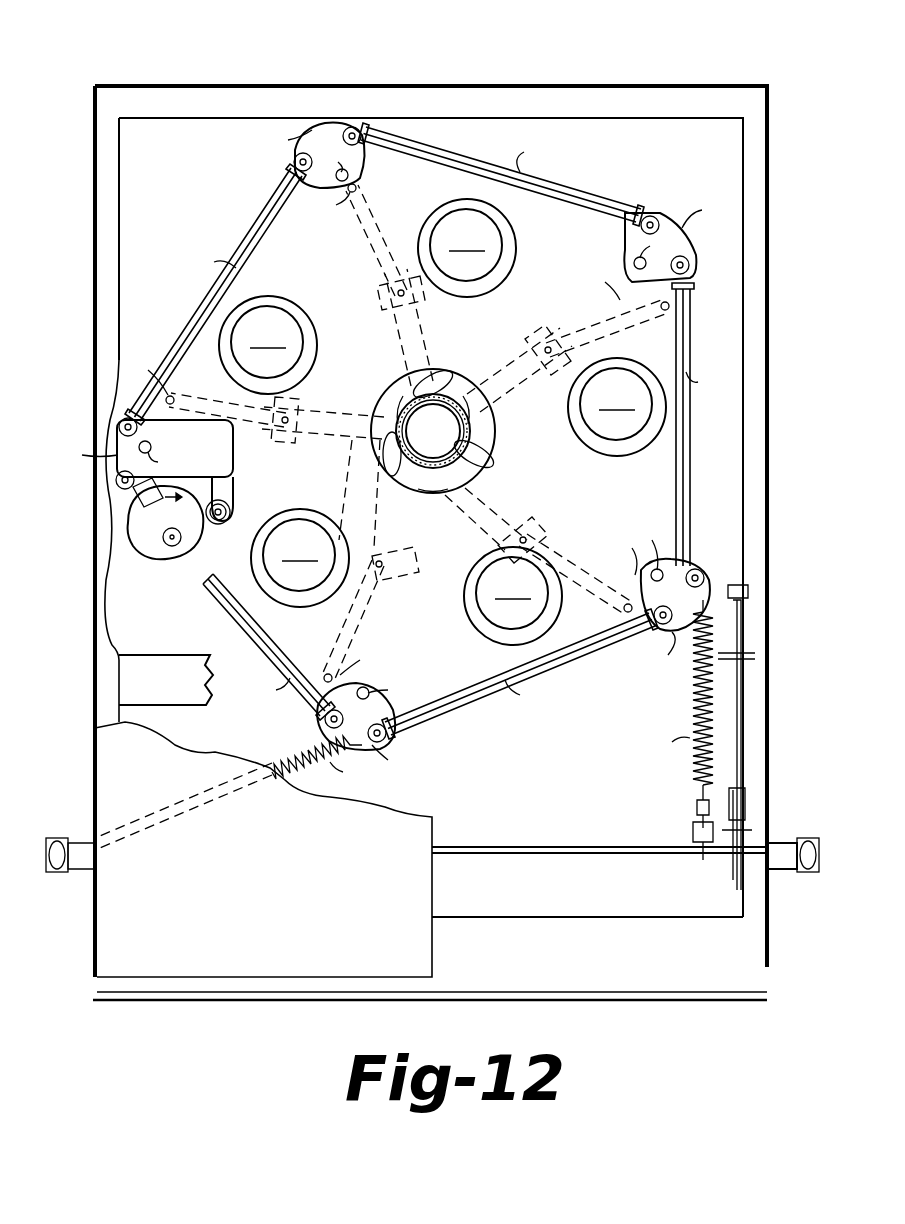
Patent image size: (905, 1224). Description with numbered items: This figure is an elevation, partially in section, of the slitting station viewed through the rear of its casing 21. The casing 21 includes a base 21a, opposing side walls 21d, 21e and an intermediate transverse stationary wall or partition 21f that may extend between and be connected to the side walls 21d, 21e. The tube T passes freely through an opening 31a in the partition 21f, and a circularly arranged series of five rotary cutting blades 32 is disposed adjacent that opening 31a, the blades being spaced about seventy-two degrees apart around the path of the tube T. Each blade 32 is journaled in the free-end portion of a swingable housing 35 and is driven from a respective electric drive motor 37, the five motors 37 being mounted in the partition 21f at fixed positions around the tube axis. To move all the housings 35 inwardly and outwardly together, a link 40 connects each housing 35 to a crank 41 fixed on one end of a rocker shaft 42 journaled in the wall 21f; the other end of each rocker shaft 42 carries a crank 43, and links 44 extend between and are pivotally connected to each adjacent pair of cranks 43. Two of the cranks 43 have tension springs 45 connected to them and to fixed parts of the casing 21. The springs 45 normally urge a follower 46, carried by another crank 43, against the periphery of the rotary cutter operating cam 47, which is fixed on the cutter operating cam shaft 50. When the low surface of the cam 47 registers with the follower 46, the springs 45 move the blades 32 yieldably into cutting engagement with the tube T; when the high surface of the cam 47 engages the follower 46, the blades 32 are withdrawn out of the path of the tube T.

The casing 21 is at (520, 85).
The base 21a is at (555, 920).
The side wall 21d is at (770, 352).
The side wall 21e is at (93, 240).
The intermediate transverse stationary wall or partition 21f is at (188, 192).
The opening 31a is at (408, 475).
The rotary cutting blade 32 is at (478, 385).
The swingable housing 35 is at (431, 446).
The electric drive motor 37 is at (442, 422).
The link 40 is at (417, 433).
The crank 41 is at (395, 433).
The rocker shaft 42 is at (410, 420).
The crank 43 is at (392, 451).
The link 44 is at (428, 431).
The tension spring 45 is at (404, 730).
The follower 46 is at (228, 525).
The rotary cutter operating cam 47 is at (140, 498).
The cutter operating cam shaft 50 is at (168, 548).
The tube T is at (478, 452).